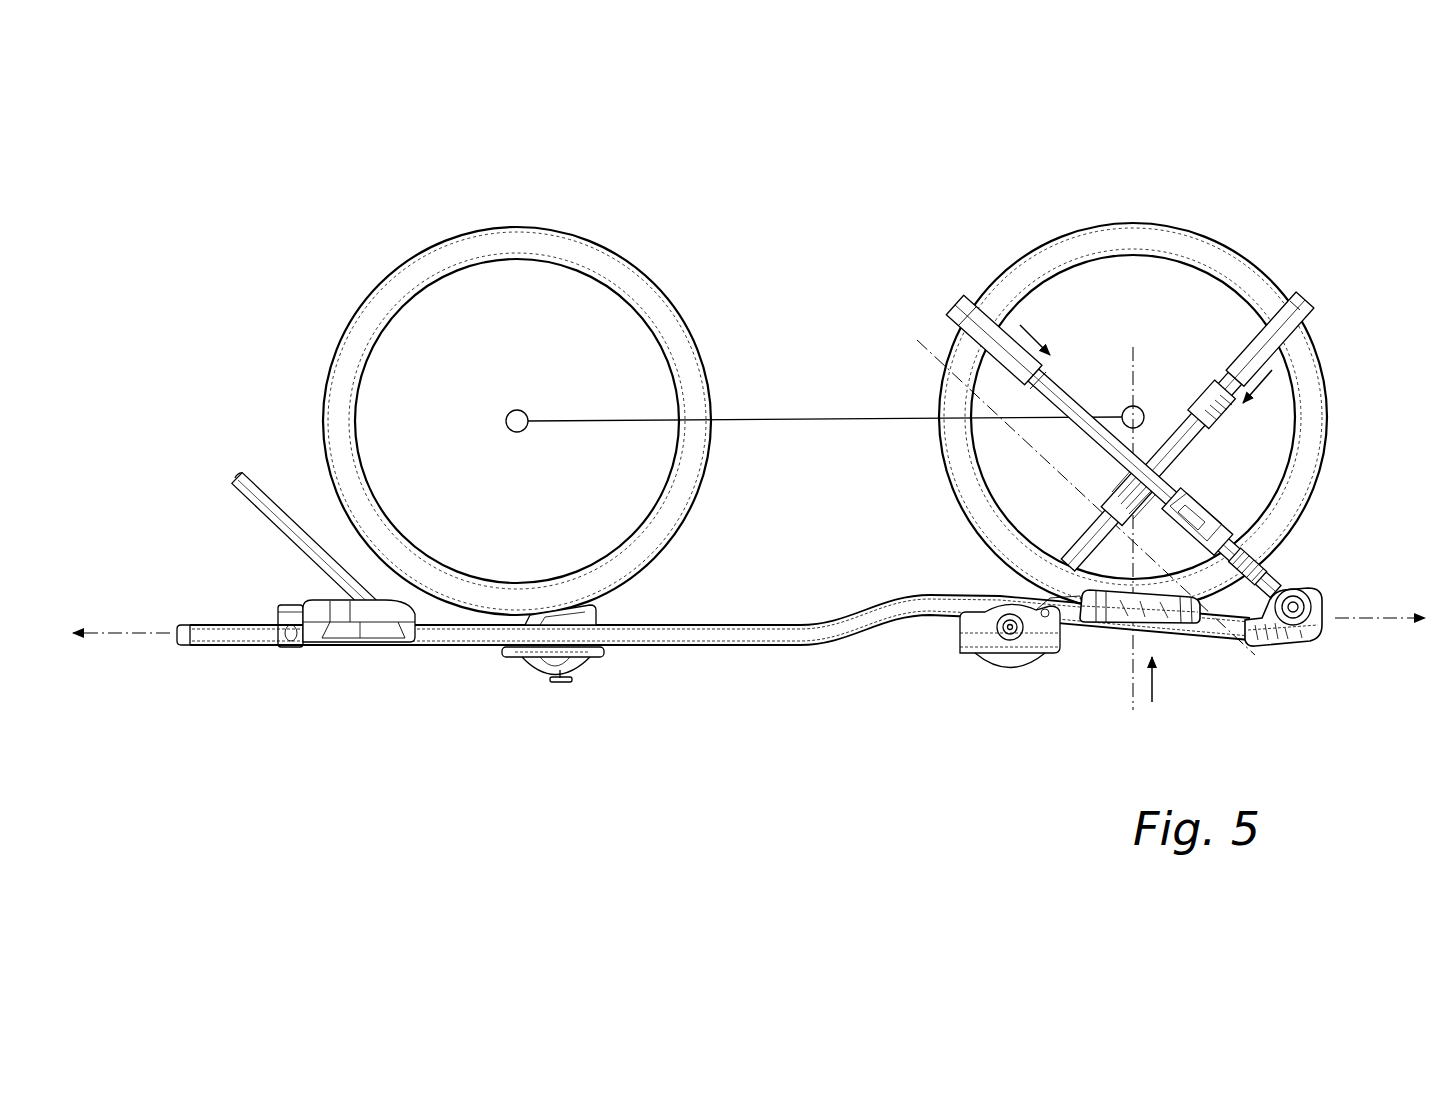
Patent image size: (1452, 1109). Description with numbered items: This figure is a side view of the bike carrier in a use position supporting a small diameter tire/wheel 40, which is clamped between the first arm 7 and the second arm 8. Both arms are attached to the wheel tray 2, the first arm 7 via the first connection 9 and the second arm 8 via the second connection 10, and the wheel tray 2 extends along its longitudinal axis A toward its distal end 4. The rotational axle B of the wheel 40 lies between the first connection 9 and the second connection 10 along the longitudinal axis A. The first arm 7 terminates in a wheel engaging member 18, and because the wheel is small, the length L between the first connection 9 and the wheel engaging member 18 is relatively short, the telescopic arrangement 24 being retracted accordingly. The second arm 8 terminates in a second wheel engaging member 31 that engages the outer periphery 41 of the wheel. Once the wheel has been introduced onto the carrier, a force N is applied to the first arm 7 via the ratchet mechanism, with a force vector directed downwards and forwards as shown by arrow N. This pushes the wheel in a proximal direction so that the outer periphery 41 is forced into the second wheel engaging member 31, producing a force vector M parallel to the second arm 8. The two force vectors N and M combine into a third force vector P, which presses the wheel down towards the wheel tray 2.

The wheel tray 2 is at (715, 637).
The distal end 4 is at (170, 633).
The first wheel supporting member 7 is at (1268, 572).
The second wheel supporting member 8 is at (1060, 545).
The first connection 9 is at (1315, 643).
The second connection 10 is at (1010, 630).
The wheel engaging member 18 is at (950, 297).
The telescopic arrangement 24 is at (1227, 540).
The wheel engaging member 31 is at (1307, 294).
The tire/wheel 40 is at (1254, 270).
The outer periphery 41 is at (1320, 357).
The longitudinal axis A is at (1383, 613).
The rotational axle B is at (1140, 408).
The length L is at (930, 358).
The force vector M is at (1252, 403).
The force N is at (1020, 325).
The third force vector P is at (1152, 690).